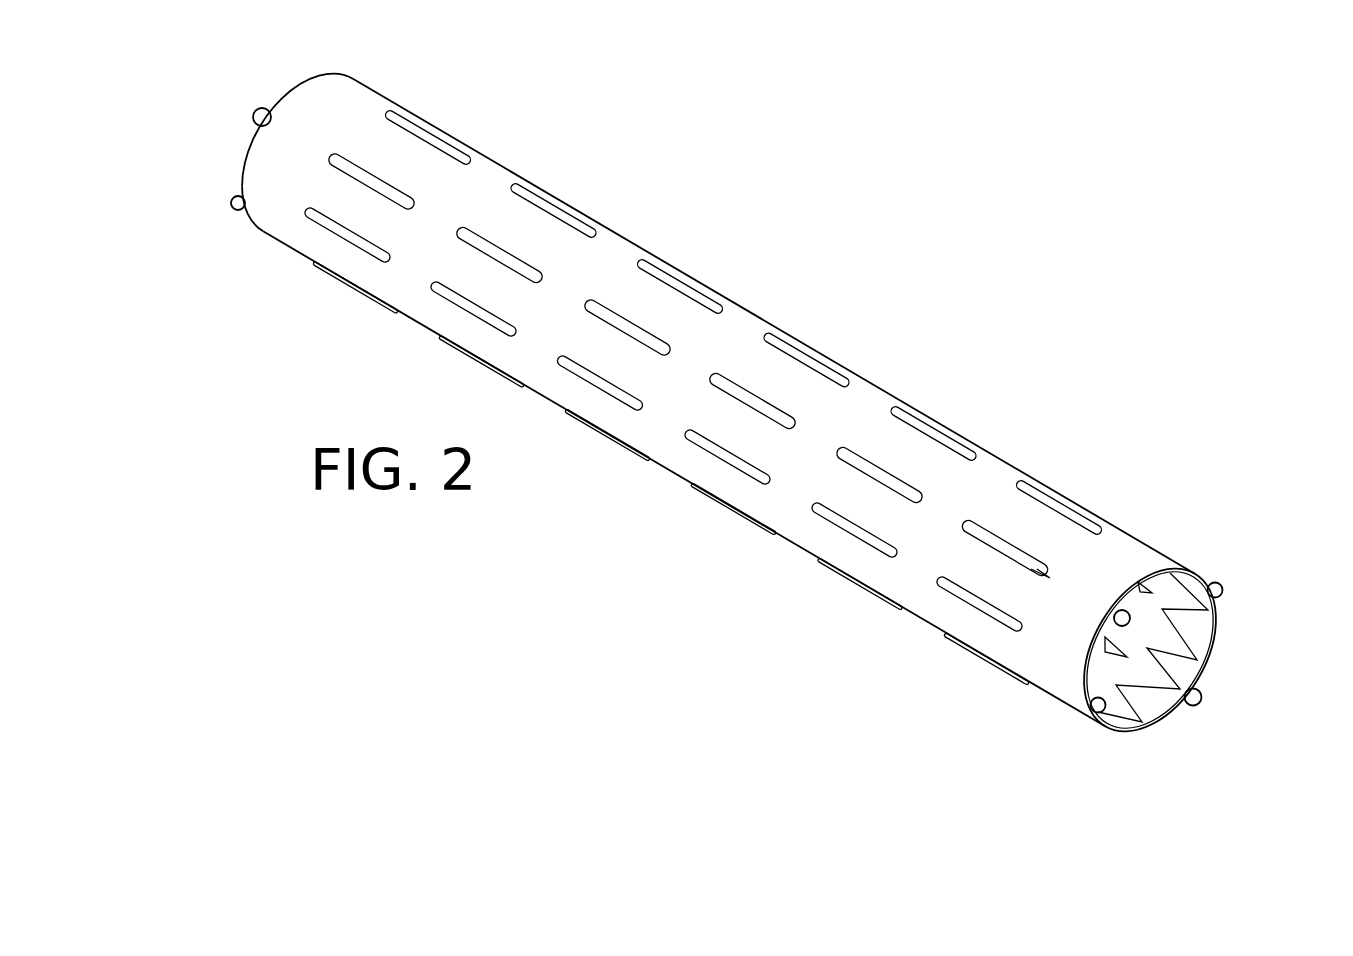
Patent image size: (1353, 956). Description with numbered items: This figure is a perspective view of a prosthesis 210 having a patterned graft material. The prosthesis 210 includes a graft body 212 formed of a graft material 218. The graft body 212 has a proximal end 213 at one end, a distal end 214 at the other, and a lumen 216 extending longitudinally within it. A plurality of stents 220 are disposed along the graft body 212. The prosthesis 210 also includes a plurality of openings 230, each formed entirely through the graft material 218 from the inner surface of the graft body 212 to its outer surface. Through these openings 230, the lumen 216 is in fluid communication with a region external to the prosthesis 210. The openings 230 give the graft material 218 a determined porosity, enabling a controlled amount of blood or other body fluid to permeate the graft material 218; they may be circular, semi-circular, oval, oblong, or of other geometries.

The prosthesis 210 is at (720, 393).
The graft body 212 is at (337, 110).
The proximal end 213 is at (298, 90).
The distal end 214 is at (1143, 582).
The lumen 216 is at (245, 150).
The graft material 218 is at (282, 182).
The stents 220 is at (1213, 633).
The openings 230 is at (842, 527).